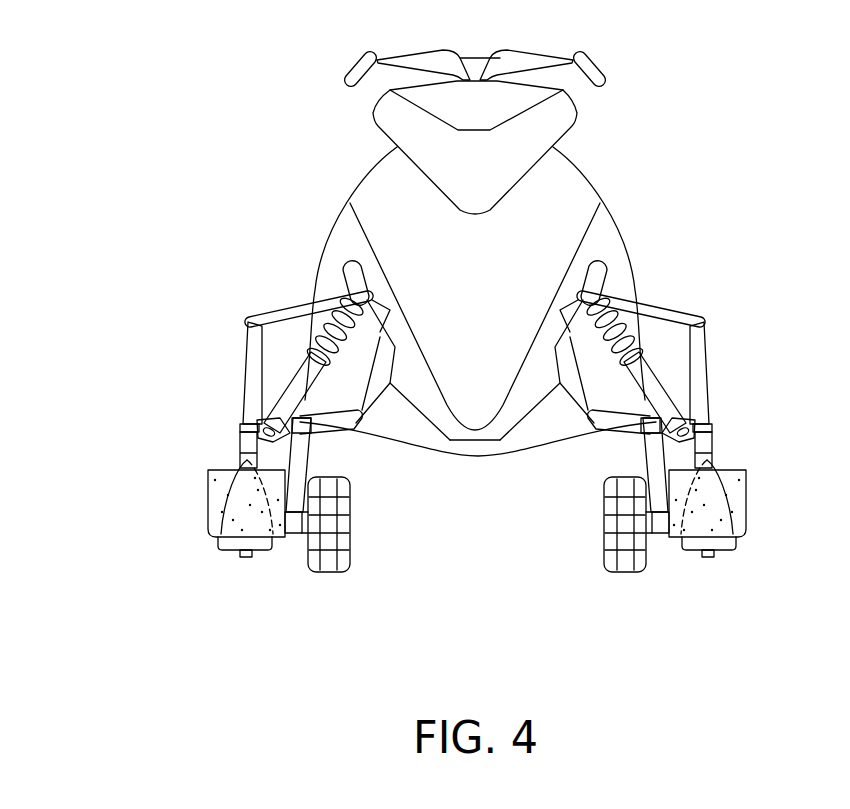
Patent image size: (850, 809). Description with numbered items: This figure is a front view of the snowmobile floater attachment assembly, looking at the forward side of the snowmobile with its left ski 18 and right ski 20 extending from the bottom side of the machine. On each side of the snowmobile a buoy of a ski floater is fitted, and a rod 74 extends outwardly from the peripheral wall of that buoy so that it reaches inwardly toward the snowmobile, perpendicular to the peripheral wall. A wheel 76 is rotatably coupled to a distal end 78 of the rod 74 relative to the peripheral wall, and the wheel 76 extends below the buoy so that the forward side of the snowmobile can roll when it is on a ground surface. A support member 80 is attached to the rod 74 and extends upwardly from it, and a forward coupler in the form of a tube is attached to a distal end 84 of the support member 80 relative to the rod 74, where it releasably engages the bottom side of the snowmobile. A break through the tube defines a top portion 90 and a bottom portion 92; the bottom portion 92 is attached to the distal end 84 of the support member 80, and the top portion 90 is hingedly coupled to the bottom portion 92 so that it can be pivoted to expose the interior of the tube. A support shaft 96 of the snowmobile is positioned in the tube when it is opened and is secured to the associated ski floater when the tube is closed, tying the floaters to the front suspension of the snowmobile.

The left ski 18 is at (300, 497).
The right ski 20 is at (717, 460).
The rod 74 is at (652, 508).
The wheel 76 is at (607, 571).
The distal end 78 is at (655, 535).
The support member 80 is at (257, 457).
The distal end 84 is at (312, 447).
The top portion 90 is at (247, 428).
The bottom portion 92 is at (268, 420).
The support shaft 96 is at (297, 417).